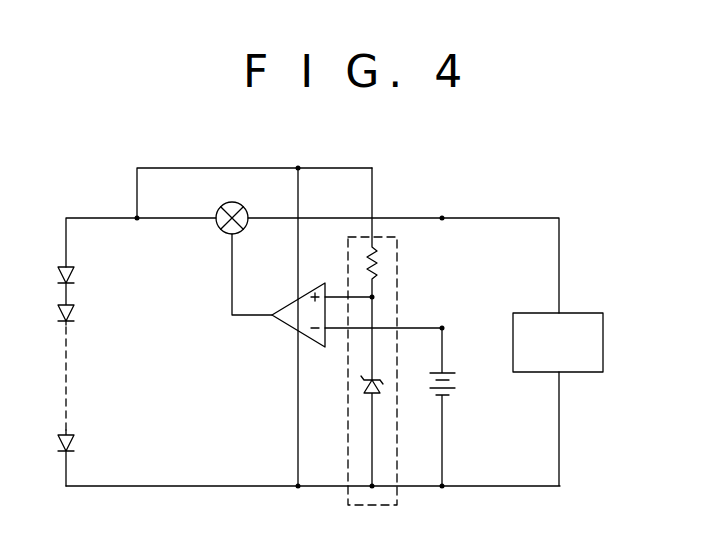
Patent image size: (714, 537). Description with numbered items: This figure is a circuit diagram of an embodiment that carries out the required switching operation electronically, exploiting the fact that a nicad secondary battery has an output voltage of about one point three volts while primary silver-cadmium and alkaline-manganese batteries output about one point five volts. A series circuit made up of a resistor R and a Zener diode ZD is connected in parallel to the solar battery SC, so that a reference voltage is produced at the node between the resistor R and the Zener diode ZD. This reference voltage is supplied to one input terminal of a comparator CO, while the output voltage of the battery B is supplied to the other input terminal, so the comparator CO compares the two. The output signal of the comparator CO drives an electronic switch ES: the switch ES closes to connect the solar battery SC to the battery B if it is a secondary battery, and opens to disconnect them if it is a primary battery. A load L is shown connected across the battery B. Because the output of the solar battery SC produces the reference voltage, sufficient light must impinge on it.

The solar battery SC is at (76, 274).
The electronic switch ES is at (229, 203).
The comparator CO is at (291, 312).
The resistor R is at (379, 274).
The Zener diode ZD is at (366, 386).
The battery B is at (452, 407).
The load L is at (604, 339).